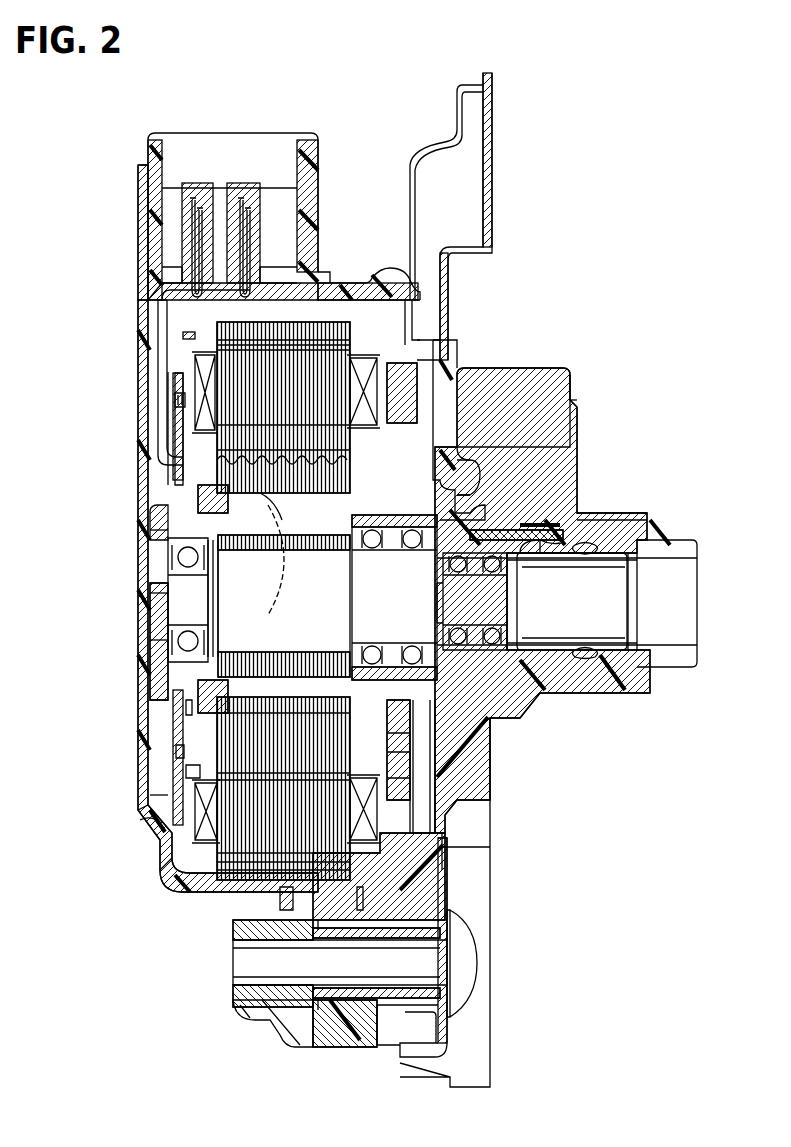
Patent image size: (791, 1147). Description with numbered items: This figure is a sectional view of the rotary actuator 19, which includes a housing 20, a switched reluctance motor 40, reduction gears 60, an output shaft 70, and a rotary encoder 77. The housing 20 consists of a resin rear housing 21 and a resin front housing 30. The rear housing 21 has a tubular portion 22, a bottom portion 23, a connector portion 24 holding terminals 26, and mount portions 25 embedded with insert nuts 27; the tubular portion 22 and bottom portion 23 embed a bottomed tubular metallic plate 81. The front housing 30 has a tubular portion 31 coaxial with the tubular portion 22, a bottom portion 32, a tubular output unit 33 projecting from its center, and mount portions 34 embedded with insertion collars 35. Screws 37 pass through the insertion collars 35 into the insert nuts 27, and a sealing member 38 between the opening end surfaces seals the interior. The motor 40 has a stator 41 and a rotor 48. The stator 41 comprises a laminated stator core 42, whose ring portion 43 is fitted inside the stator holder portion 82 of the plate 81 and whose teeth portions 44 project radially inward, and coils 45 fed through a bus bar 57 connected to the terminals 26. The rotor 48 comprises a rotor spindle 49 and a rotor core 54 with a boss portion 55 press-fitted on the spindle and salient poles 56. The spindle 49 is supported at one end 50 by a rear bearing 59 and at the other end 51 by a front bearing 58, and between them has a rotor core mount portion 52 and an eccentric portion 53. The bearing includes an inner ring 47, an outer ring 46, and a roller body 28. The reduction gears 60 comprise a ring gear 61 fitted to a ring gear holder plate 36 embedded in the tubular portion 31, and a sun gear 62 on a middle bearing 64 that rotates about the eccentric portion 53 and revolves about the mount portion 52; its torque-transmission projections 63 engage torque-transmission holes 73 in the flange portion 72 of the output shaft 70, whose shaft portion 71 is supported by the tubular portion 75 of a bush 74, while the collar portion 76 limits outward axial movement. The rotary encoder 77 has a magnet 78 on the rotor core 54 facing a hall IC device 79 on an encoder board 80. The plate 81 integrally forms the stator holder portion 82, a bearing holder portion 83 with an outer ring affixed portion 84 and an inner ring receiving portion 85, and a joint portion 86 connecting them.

The rotary actuator 19 is at (112, 130).
The housing 20 is at (256, 173).
The rear housing 21 is at (236, 189).
The tubular portion 22 is at (200, 895).
The bottom portion 23 is at (145, 815).
The connector portion 24 is at (140, 215).
The mount portions 25 is at (275, 1047).
The terminals 26 is at (194, 198).
The insert nuts 27 is at (245, 990).
The roller body 28 is at (175, 560).
The front housing 30 is at (358, 268).
The tubular portion 31 is at (330, 288).
The bottom portion 32 is at (455, 400).
The output unit 33 is at (637, 673).
The mount portions 34 is at (358, 1040).
The insertion collars 35 is at (332, 1010).
The ring gear holder plate 36 is at (390, 297).
The screws 37 is at (415, 965).
The sealing member 38 is at (305, 1000).
The switched reluctance motor 40 is at (205, 866).
The stator 41 is at (58, 328).
The stator core 42 is at (129, 403).
The ring portion 43 is at (183, 336).
The teeth portions 44 is at (195, 378).
The coils 45 is at (185, 400).
The outer ring 46 is at (150, 548).
The inner ring 47 is at (160, 610).
The rotor 48 is at (485, 651).
The rotor spindle 49 is at (455, 640).
The one end 50 is at (215, 590).
The other end 51 is at (560, 605).
The rotor core mount portion 52 is at (145, 429).
The eccentric portion 53 is at (670, 590).
The rotor core 54 is at (399, 601).
The boss portion 55 is at (425, 690).
The salient poles 56 is at (440, 730).
The bus bar 57 is at (175, 775).
The front bearing 58 is at (485, 635).
The rear bearing 59 is at (109, 602).
The reduction gears 60 is at (476, 248).
The ring gear 61 is at (420, 345).
The sun gear 62 is at (440, 385).
The torque-transmission projections 63 is at (565, 406).
The middle bearing 64 is at (470, 485).
The output shaft 70 is at (585, 645).
The shaft portion 71 is at (640, 523).
The flange portion 72 is at (480, 500).
The torque-transmission holes 73 is at (490, 465).
The bush 74 is at (615, 507).
The tubular portion 75 is at (545, 535).
The collar portion 76 is at (540, 520).
The rotary encoder 77 is at (111, 749).
The magnet 78 is at (170, 715).
The hall IC device 79 is at (185, 690).
The encoder board 80 is at (170, 740).
The plate 81 is at (160, 840).
The stator holder portion 82 is at (240, 945).
The bearing holder portion 83 is at (150, 598).
The outer ring affixed portion 84 is at (165, 515).
The inner ring receiving portion 85 is at (165, 640).
The joint portion 86 is at (168, 800).